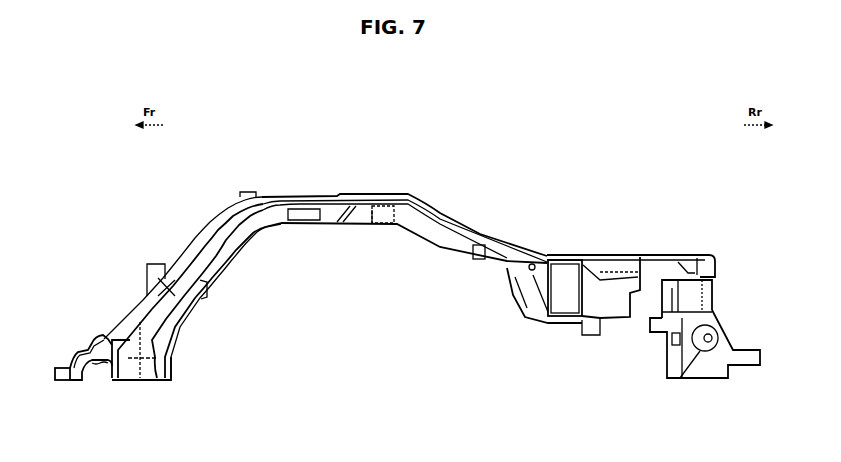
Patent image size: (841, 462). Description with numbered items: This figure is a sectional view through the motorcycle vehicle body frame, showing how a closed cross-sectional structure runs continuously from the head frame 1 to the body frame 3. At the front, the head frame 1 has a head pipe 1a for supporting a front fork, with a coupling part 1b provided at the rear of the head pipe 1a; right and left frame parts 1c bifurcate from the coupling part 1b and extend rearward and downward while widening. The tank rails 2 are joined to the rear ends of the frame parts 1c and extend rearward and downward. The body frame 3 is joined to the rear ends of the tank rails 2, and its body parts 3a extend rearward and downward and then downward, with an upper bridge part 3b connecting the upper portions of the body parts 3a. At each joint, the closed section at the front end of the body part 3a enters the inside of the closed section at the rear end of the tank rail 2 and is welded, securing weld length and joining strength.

The head frame 1 is at (130, 308).
The head pipe 1a is at (93, 344).
The coupling part 1b is at (140, 381).
The frame part 1c is at (190, 239).
The tank rail 2 is at (425, 207).
The body frame 3 is at (610, 256).
The body part 3a is at (702, 300).
The upper bridge part 3b is at (683, 256).